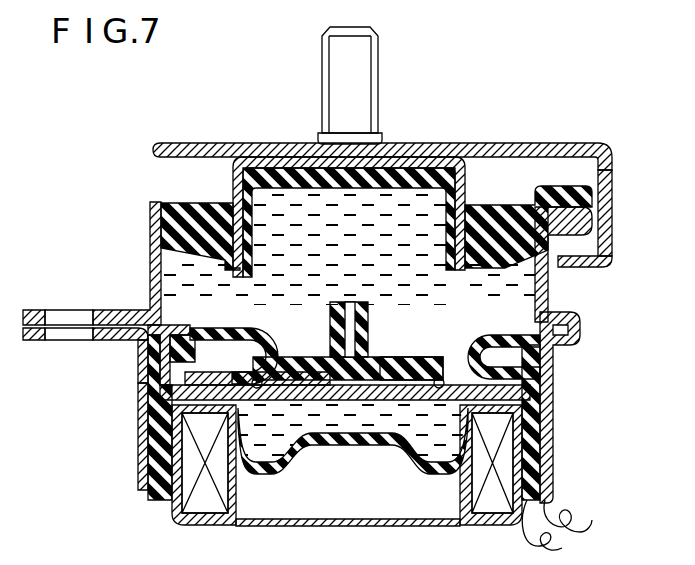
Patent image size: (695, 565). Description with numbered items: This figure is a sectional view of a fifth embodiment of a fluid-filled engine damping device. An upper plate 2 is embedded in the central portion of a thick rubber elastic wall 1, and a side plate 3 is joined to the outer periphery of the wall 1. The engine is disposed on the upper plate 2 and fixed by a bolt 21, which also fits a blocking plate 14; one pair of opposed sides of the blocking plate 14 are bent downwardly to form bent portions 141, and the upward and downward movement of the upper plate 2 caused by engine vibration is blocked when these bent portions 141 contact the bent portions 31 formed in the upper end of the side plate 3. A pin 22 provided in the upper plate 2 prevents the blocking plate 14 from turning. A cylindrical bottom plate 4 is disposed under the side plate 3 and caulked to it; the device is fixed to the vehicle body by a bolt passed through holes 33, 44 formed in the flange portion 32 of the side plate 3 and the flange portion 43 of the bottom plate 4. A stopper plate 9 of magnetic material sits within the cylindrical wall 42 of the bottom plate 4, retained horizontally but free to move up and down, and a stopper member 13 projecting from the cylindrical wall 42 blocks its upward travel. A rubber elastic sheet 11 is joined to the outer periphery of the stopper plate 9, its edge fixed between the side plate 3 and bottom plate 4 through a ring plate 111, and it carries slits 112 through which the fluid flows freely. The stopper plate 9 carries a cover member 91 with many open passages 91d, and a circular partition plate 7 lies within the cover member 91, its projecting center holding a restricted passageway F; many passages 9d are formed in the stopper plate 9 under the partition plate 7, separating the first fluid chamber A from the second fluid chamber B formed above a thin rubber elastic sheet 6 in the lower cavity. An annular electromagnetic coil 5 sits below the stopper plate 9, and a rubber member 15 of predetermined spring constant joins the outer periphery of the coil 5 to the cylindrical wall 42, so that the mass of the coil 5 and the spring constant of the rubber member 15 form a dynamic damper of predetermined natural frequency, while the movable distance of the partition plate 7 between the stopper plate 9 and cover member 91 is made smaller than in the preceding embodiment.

The rubber elastic wall 1 is at (485, 215).
The upper plate 2 is at (298, 162).
The side plate 3 is at (207, 262).
The bottom plate 4 is at (548, 452).
The electromagnetic coil 5 is at (210, 500).
The rubber elastic sheet 6 is at (327, 434).
The partition plate 7 is at (368, 305).
The stopper plate 9 is at (530, 392).
The passages 9d is at (385, 402).
The rubber elastic sheet 11 is at (238, 346).
The stopper member 13 is at (138, 348).
The blocking plate 14 is at (545, 155).
The rubber member 15 is at (158, 478).
The bolt 21 is at (369, 97).
The pin 22 is at (262, 152).
The bent portions 31 is at (580, 222).
The flange portion 32 is at (108, 318).
The holes 33 is at (64, 314).
The cylindrical wall 42 is at (146, 432).
The flange portion 43 is at (107, 334).
The holes 44 is at (62, 334).
The cover member 91 is at (290, 360).
The open passages 91d is at (386, 360).
The ring plate 111 is at (173, 333).
The slits 112 is at (464, 343).
The bent portions 141 is at (603, 245).
The first fluid chamber A is at (430, 178).
The second fluid chamber B is at (410, 452).
The restricted passageway F is at (346, 303).